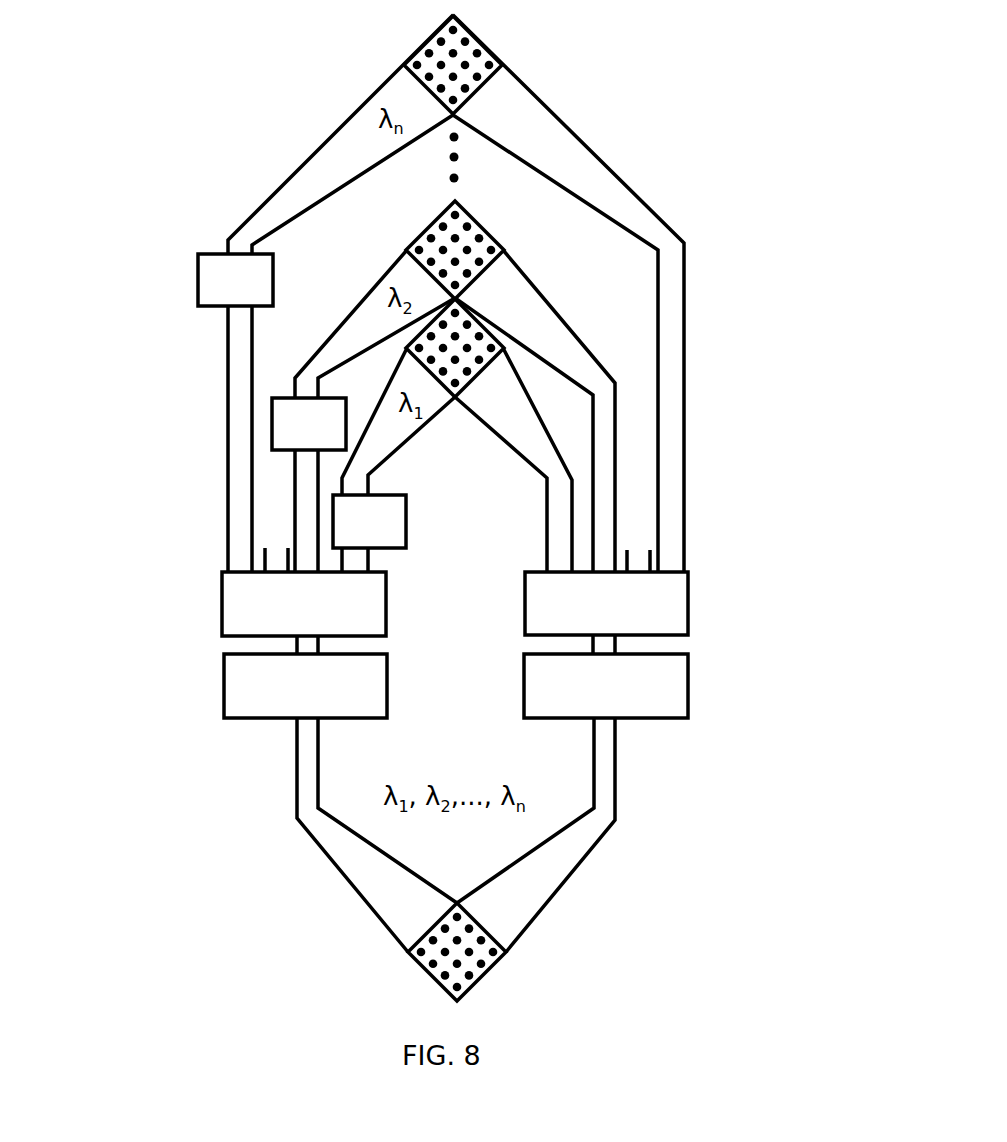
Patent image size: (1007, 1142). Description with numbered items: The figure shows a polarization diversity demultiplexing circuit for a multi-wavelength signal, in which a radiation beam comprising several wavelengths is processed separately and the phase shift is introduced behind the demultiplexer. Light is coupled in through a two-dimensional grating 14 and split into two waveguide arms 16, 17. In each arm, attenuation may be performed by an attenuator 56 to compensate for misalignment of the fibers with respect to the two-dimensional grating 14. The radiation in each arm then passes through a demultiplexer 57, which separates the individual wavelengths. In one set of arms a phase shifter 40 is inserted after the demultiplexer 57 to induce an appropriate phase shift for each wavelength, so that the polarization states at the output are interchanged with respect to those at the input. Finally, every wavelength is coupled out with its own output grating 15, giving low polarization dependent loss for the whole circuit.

The two-dimensional grating 14 is at (462, 973).
The output coupling grating 15 is at (457, 82).
The waveguide arm 16 is at (365, 885).
The waveguide arm 17 is at (527, 877).
The phase shifter 40 is at (208, 290).
The attenuator 56 is at (273, 680).
The demultiplexer 57 is at (240, 615).